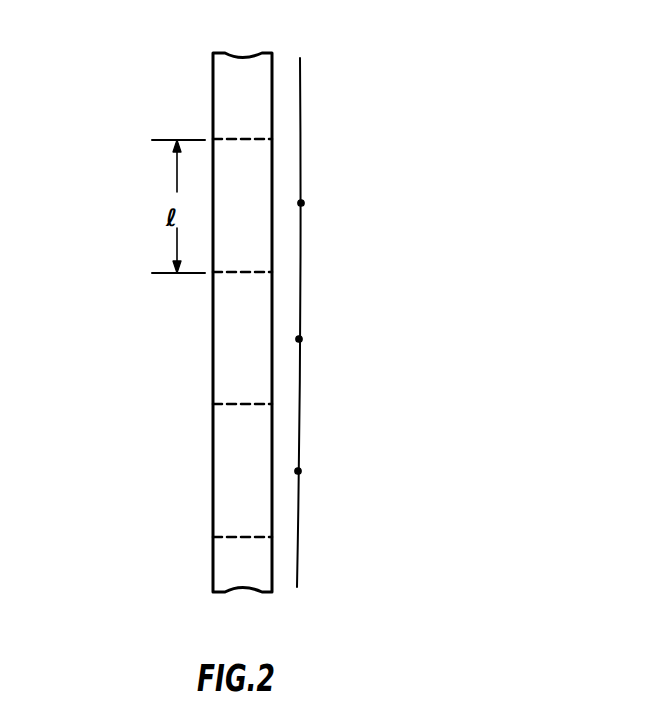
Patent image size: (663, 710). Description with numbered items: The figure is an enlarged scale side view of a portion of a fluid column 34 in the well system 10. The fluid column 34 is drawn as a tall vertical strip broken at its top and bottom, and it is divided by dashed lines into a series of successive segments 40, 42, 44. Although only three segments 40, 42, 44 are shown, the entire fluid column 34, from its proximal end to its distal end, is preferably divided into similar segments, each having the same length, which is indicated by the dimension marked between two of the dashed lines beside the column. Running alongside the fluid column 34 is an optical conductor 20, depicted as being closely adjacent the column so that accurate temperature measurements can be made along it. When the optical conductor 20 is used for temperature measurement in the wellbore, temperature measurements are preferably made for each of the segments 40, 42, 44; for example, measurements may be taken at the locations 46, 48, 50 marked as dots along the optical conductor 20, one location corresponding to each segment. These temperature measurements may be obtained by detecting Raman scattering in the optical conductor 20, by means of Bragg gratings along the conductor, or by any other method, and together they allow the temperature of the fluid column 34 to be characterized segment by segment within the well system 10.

The well system 10 is at (483, 103).
The optical conductor 20 is at (301, 104).
The fluid column 34 is at (212, 455).
The first segment 40 is at (256, 167).
The second segment 42 is at (256, 292).
The third segment 44 is at (256, 422).
The temperature measurement location 46 is at (301, 203).
The temperature measurement location 48 is at (299, 339).
The temperature measurement location 50 is at (298, 471).